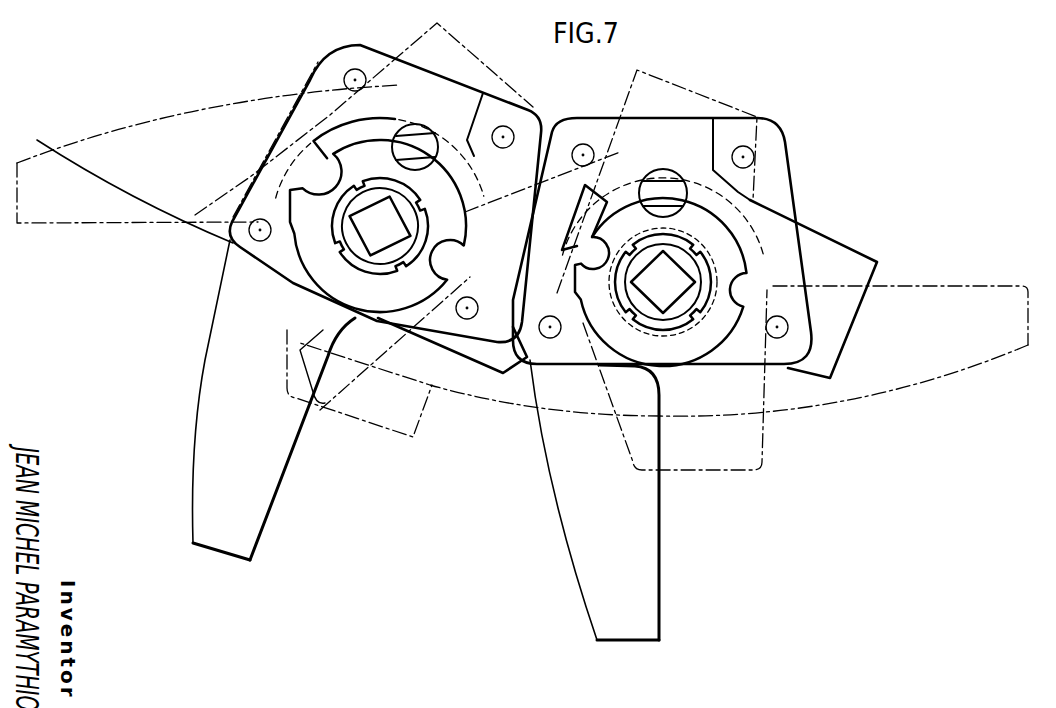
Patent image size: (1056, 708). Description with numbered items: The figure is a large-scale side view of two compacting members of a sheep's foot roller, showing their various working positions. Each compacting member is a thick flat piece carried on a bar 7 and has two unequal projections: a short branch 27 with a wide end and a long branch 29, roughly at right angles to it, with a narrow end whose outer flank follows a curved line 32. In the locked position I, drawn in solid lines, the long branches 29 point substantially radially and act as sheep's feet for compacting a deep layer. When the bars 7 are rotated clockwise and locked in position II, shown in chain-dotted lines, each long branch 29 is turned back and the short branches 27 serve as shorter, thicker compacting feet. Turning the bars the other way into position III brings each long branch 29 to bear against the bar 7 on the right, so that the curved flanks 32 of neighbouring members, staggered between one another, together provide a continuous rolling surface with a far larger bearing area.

The bar 7 is at (758, 214).
The short branch 27 is at (393, 412).
The long branch 29 is at (260, 466).
The curved line 32 is at (510, 403).
The locked position I is at (258, 542).
The position II is at (50, 223).
The position III is at (498, 278).